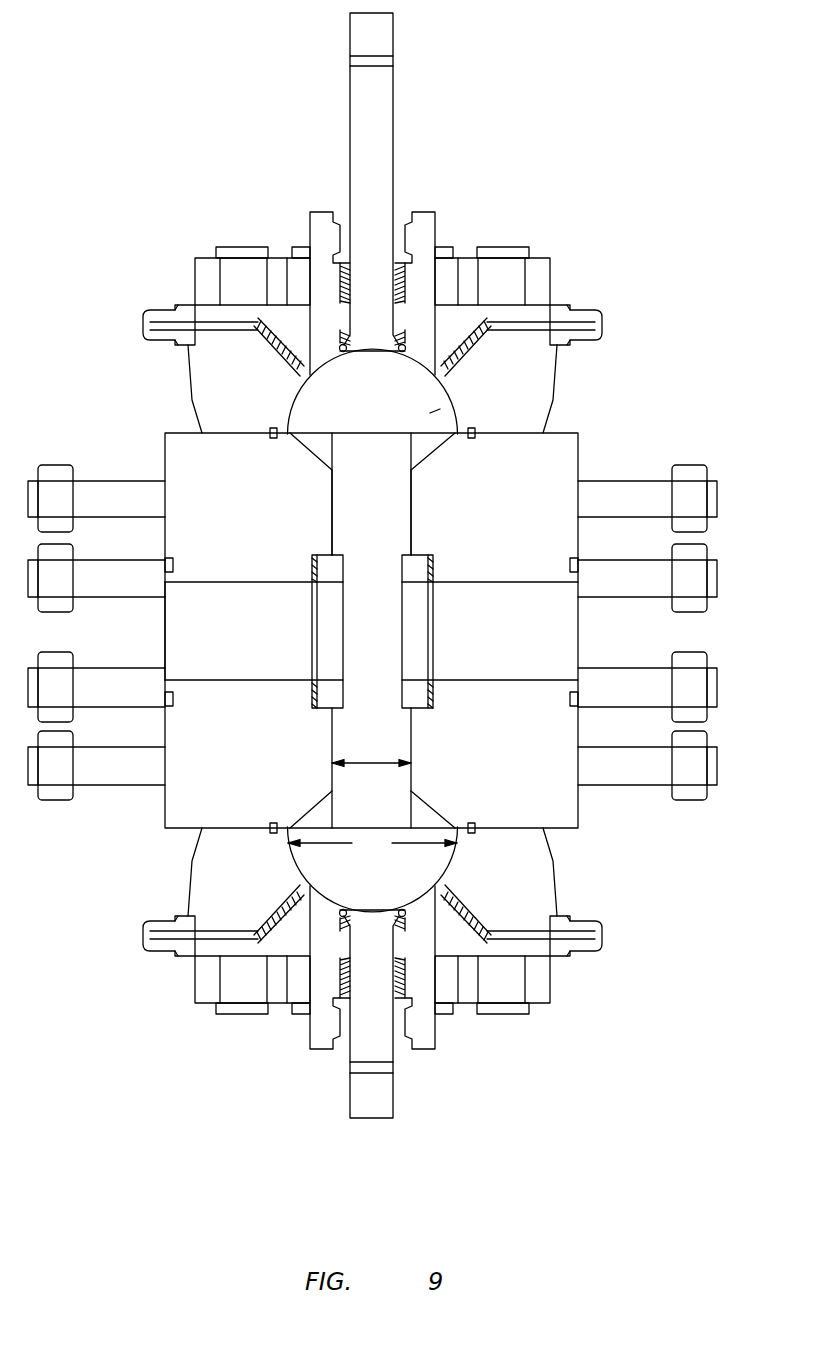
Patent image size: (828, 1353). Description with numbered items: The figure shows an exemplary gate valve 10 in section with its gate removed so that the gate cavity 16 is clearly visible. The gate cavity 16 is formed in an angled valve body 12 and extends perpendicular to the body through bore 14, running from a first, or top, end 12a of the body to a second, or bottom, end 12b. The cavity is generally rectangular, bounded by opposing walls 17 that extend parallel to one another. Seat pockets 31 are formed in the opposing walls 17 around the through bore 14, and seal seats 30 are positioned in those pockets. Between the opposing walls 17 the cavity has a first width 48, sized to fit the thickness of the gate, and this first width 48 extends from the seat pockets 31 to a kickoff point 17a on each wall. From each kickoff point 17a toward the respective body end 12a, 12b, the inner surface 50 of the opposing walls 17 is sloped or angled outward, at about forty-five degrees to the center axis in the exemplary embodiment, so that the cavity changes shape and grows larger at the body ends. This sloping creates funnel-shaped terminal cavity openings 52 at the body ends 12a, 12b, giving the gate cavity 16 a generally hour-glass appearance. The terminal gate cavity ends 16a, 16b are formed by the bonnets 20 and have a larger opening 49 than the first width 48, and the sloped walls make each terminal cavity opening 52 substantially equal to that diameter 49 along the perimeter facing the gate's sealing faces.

The gate valve 10 is at (578, 150).
The valve body 12 is at (563, 803).
The first end 12a is at (513, 440).
The second end 12b is at (232, 828).
The through bore 14 is at (233, 648).
The gate cavity 16 is at (413, 495).
The terminal gate cavity end 16a is at (395, 417).
The terminal gate cavity end 16b is at (395, 895).
The opposing walls 17 is at (335, 519).
The kickoff point 17a is at (331, 470).
The bonnet 20 is at (207, 388).
The seal seat 30 is at (433, 557).
The seat pocket 31 is at (312, 556).
The first width 48 is at (369, 762).
The larger opening 49 is at (372, 849).
The inner surface 50 is at (312, 447).
The terminal cavity opening 52 is at (432, 412).